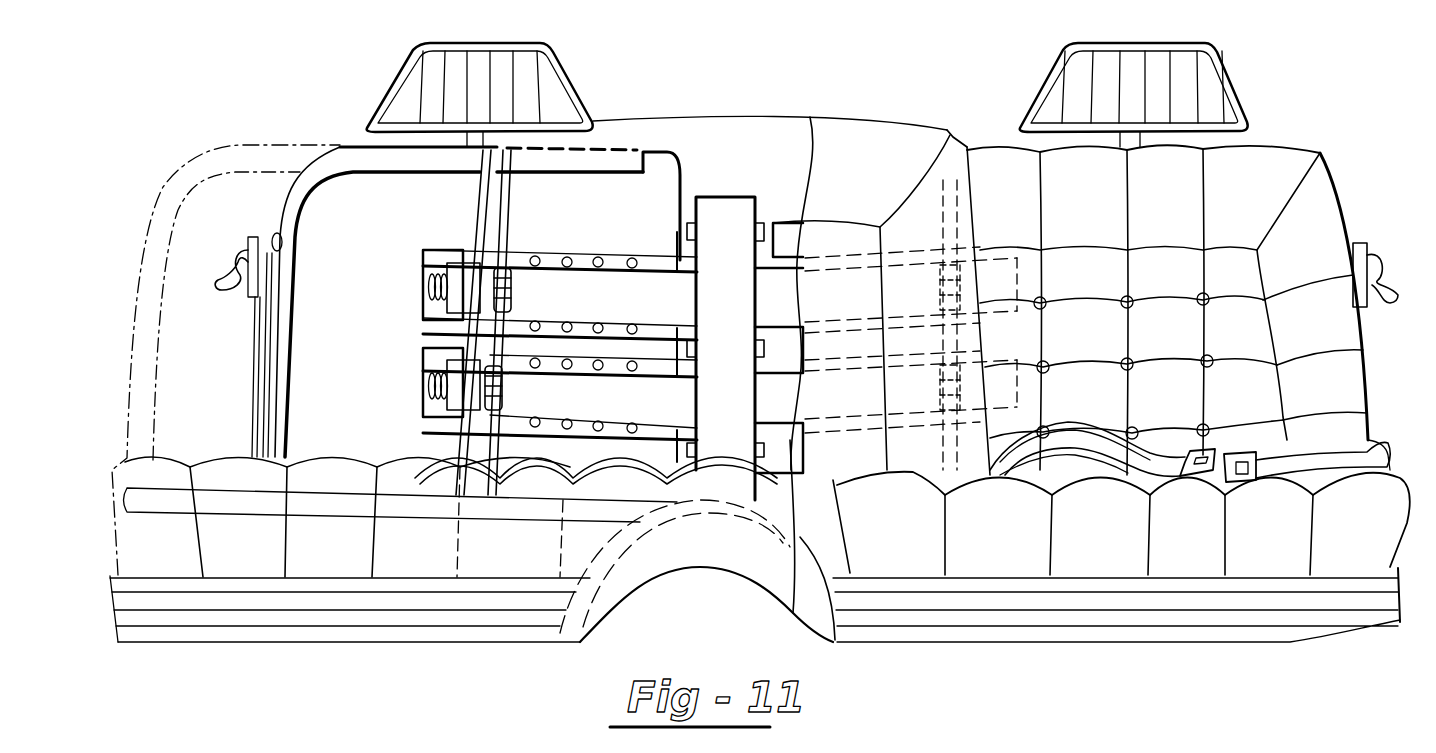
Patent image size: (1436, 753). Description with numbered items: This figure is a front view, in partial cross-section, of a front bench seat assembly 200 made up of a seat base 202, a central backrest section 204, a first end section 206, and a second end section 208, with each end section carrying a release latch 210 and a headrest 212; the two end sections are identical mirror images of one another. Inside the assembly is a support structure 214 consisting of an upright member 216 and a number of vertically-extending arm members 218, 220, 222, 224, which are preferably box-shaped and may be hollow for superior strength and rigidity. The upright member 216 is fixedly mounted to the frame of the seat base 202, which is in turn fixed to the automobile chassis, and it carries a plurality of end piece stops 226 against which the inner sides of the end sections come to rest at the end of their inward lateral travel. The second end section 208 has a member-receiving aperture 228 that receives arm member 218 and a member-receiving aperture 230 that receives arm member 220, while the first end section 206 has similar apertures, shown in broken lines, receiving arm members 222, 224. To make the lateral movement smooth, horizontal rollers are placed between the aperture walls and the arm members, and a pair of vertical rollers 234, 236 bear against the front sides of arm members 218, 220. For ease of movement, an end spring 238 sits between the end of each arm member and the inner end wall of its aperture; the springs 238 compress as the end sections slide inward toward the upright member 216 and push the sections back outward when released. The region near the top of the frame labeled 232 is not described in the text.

The seat assembly 200 is at (1300, 113).
The seat base 202 is at (1025, 567).
The central backrest section 204 is at (783, 150).
The first end section 206 is at (1320, 197).
The second end section 208 is at (330, 167).
The release latch 210 is at (217, 280).
The headrest 212 is at (573, 18).
The support structure 214 is at (725, 212).
The upright member 216 is at (712, 428).
The vertically-extending arm member 218 is at (640, 310).
The vertically-extending arm member 220 is at (618, 404).
The vertically-extending arm member 222 is at (855, 303).
The vertically-extending arm member 224 is at (859, 407).
The end piece stop 226 is at (690, 250).
The member-receiving aperture 228 is at (408, 252).
The member-receiving aperture 230 is at (420, 410).
The hook bracket 232 is at (632, 252).
The vertical roller 234 is at (510, 278).
The vertical roller 236 is at (514, 388).
The end spring 238 is at (422, 386).